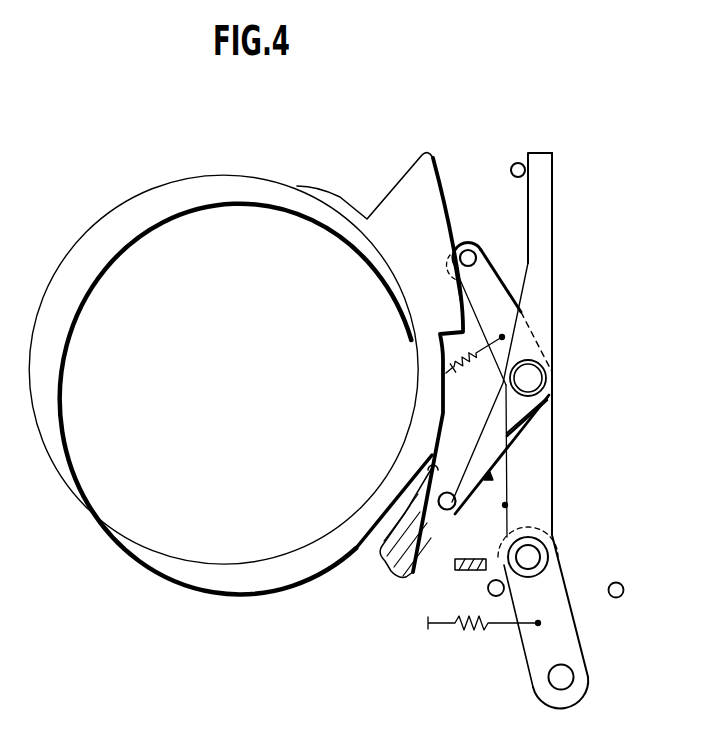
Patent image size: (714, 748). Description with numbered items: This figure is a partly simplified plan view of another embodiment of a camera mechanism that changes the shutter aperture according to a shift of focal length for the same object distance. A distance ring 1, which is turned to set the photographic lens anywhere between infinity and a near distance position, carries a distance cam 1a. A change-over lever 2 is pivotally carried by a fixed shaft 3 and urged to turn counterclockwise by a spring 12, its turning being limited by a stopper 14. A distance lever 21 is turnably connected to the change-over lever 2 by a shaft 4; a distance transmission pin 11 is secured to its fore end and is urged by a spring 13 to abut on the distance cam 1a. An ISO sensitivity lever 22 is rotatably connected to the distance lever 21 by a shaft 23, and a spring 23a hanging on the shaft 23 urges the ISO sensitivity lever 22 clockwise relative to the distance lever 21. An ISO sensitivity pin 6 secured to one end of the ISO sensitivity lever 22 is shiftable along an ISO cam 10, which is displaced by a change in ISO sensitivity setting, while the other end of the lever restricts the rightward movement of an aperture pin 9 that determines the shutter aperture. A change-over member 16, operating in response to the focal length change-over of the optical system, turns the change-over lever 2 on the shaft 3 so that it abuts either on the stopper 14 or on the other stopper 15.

The distance ring 1 is at (436, 164).
The distance cam 1a is at (283, 181).
The change-over lever 2 is at (525, 645).
The fixed shaft 3 is at (550, 683).
The shaft 4 is at (535, 556).
The ISO sensitivity pin 6 is at (455, 510).
The aperture pin 9 is at (518, 163).
The ISO cam 10 is at (392, 573).
The distance transmission pin 11 is at (472, 249).
The spring 12 is at (462, 630).
The spring 13 is at (475, 379).
The stopper 14 is at (488, 589).
The stopper 15 is at (622, 585).
The change-over member 16 is at (454, 568).
The distance lever 21 is at (545, 502).
The ISO sensitivity lever 22 is at (543, 291).
The shaft 23 is at (547, 381).
The spring 23a is at (525, 440).